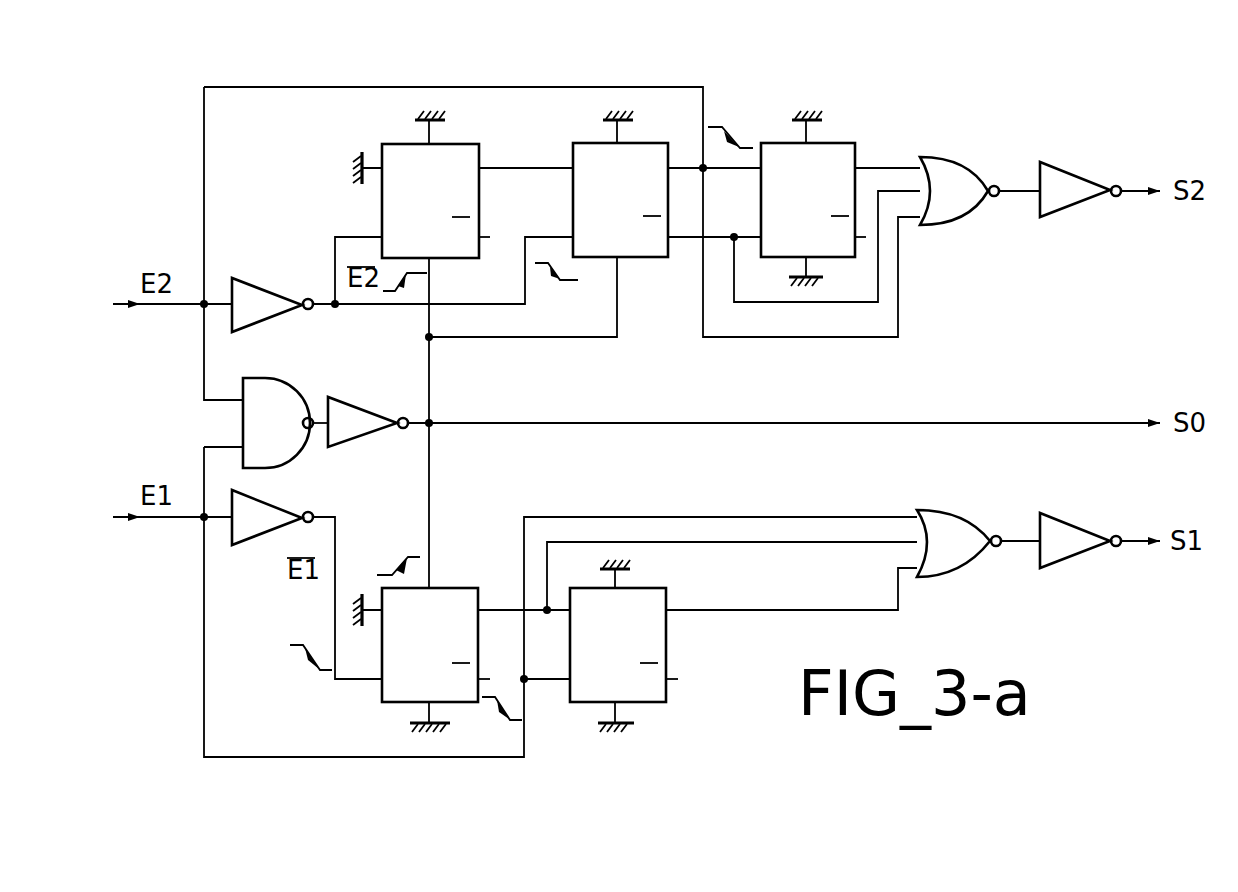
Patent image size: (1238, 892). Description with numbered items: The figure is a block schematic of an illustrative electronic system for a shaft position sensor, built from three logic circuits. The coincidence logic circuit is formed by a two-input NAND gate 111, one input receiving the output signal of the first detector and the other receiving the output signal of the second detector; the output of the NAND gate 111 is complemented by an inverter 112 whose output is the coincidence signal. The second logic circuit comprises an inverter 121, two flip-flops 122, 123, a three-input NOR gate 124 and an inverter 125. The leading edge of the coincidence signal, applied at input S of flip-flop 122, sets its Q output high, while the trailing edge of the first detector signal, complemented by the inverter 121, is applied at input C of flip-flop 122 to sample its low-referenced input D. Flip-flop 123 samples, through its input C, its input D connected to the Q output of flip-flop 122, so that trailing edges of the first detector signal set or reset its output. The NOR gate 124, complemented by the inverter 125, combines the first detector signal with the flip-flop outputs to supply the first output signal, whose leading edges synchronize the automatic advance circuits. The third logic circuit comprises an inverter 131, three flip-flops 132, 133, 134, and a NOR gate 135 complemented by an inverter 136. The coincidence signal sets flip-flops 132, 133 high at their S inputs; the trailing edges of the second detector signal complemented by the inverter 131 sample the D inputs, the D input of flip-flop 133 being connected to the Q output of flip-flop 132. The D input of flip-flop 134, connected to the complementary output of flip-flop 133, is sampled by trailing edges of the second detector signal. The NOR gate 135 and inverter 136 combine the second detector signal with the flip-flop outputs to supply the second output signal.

The NAND gate 111 is at (250, 376).
The inverter 112 is at (344, 405).
The inverter 121 is at (250, 505).
The flip-flop 122 is at (449, 587).
The flip-flop 123 is at (659, 587).
The NOR gate 124 is at (940, 512).
The inverter 125 is at (1064, 516).
The inverter 131 is at (246, 280).
The flip-flop 132 is at (462, 143).
The flip-flop 133 is at (644, 142).
The flip-flop 134 is at (839, 142).
The NOR gate 135 is at (940, 158).
The inverter 136 is at (1064, 170).